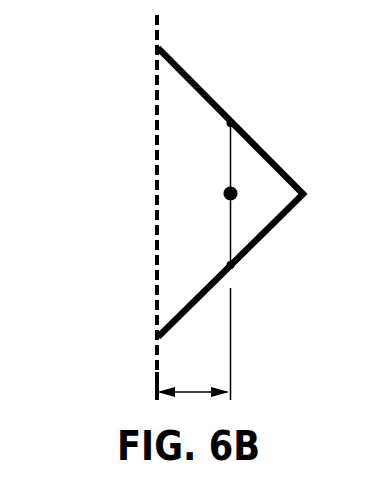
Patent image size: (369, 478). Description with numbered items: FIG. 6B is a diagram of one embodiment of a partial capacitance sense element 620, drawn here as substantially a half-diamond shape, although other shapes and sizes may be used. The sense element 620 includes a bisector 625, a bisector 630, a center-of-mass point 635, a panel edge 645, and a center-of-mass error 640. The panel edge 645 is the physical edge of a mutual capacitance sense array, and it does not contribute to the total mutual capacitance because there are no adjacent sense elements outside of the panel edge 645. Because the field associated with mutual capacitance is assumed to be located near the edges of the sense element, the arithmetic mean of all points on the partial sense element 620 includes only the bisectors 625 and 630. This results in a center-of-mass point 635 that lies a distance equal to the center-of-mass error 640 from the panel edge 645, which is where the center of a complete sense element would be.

The partial capacitance sense element 620 is at (119, 357).
The bisector 625 is at (233, 121).
The bisector 630 is at (234, 268).
The center-of-mass point 635 is at (236, 189).
The center-of-mass error 640 is at (202, 388).
The panel edge 645 is at (156, 145).